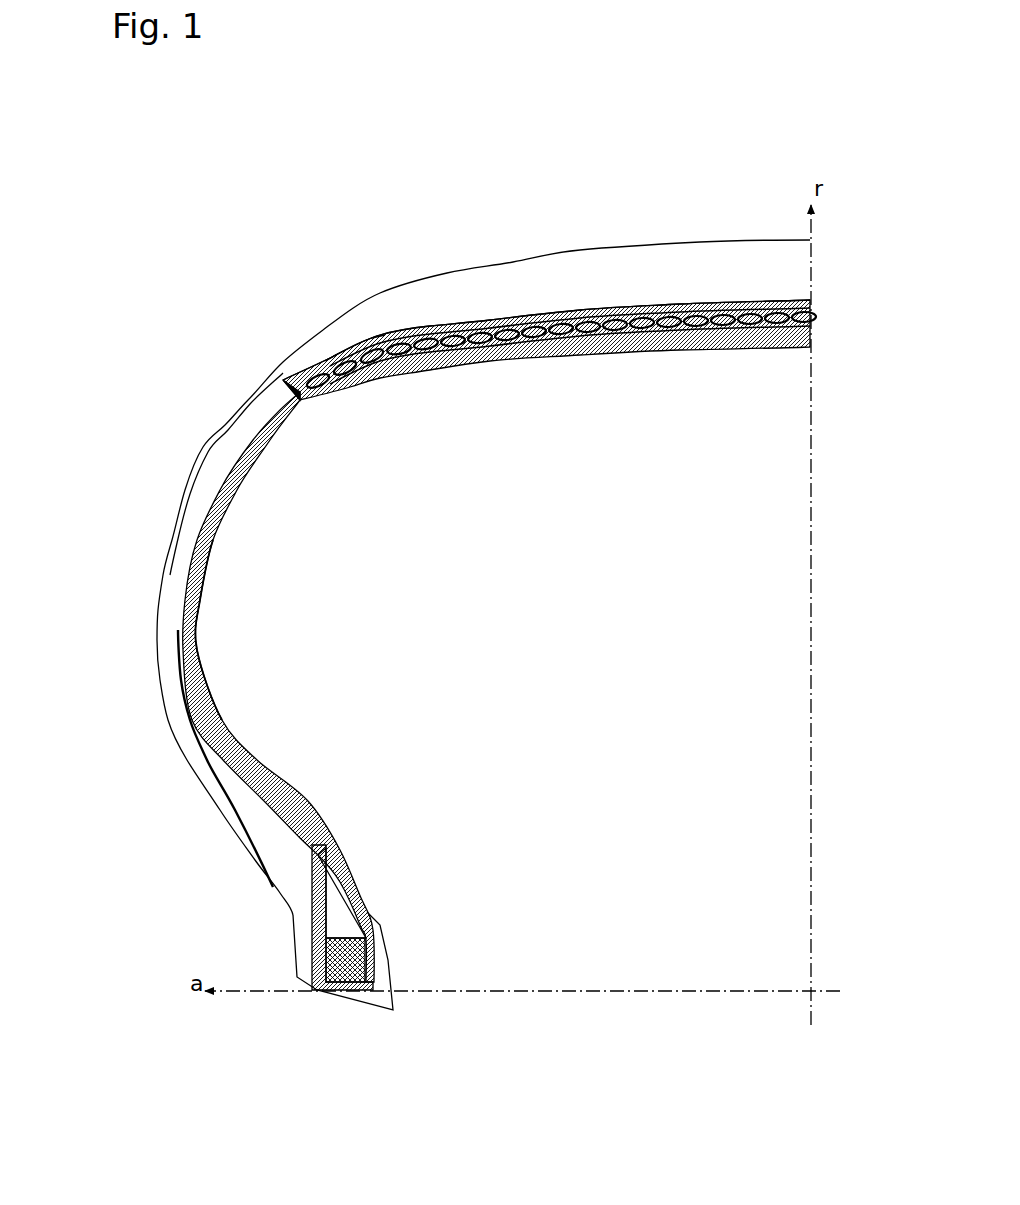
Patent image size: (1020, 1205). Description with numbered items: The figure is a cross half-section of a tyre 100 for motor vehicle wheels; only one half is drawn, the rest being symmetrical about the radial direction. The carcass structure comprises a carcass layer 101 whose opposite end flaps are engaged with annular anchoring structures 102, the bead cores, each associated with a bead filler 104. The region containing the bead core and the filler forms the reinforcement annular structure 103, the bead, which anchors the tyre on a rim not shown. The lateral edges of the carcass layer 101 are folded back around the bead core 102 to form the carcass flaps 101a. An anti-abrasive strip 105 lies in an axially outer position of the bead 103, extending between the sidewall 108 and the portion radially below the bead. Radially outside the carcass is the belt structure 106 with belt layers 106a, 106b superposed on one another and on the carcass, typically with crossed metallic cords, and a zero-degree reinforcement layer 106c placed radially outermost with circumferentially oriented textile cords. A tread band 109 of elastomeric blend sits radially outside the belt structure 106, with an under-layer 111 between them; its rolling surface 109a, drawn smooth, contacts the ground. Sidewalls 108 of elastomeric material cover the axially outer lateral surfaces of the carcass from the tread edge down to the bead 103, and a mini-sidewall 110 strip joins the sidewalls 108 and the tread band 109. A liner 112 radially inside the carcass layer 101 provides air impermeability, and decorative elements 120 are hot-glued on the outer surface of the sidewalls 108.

The tyre 100 is at (195, 425).
The carcass layer 101 is at (300, 447).
The carcass flaps 101a is at (300, 783).
The annular anchoring structure 102 is at (327, 995).
The reinforcement annular structure 103 is at (380, 907).
The bead filler 104 is at (350, 917).
The anti-abrasive strip 105 is at (240, 822).
The belt structure 106 is at (697, 303).
The belt layer 106a is at (625, 332).
The belt layer 106b is at (748, 342).
The zero-degree reinforcement layer 106c is at (520, 337).
The sidewall 108 is at (173, 572).
The tread band 109 is at (535, 285).
The rolling surface 109a is at (447, 268).
The mini-sidewall 110 is at (287, 393).
The under-layer 111 is at (370, 337).
The liner 112 is at (207, 587).
The decorative elements 120 is at (170, 517).